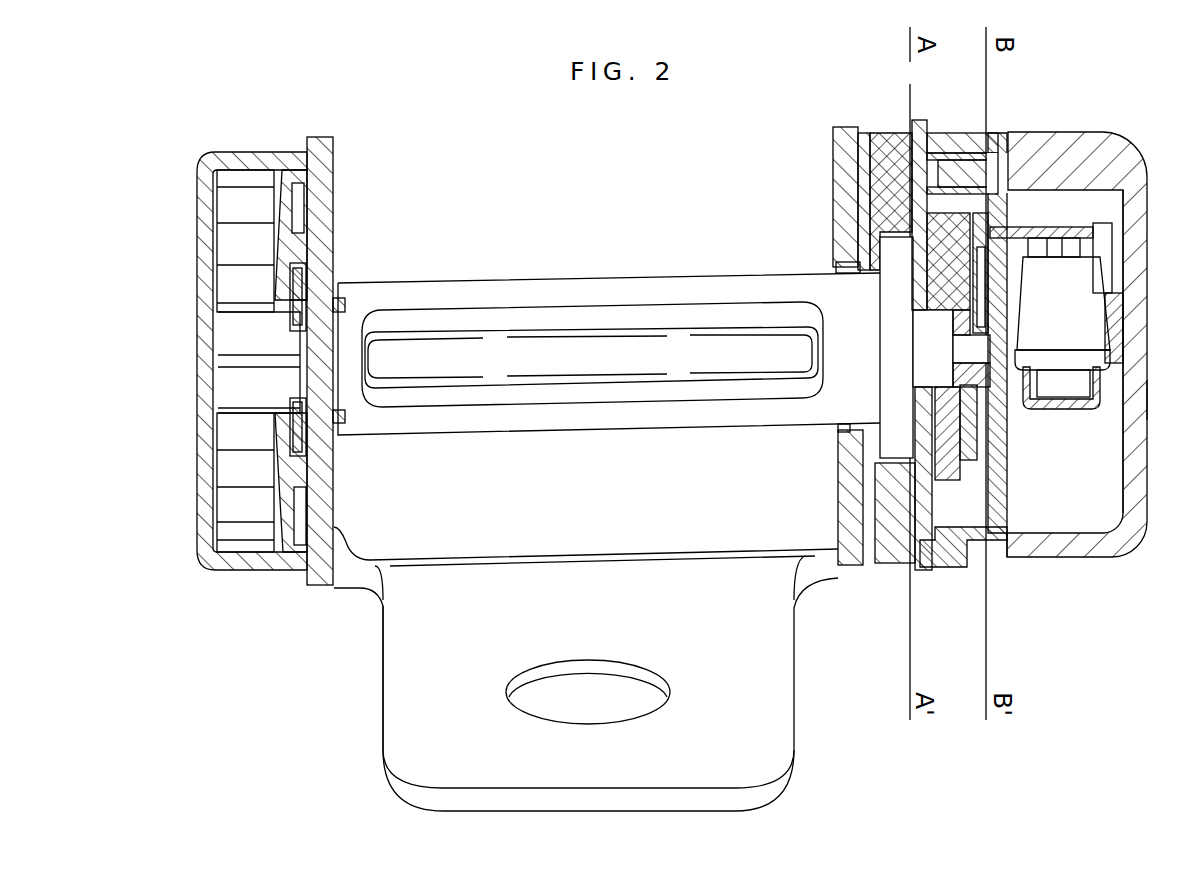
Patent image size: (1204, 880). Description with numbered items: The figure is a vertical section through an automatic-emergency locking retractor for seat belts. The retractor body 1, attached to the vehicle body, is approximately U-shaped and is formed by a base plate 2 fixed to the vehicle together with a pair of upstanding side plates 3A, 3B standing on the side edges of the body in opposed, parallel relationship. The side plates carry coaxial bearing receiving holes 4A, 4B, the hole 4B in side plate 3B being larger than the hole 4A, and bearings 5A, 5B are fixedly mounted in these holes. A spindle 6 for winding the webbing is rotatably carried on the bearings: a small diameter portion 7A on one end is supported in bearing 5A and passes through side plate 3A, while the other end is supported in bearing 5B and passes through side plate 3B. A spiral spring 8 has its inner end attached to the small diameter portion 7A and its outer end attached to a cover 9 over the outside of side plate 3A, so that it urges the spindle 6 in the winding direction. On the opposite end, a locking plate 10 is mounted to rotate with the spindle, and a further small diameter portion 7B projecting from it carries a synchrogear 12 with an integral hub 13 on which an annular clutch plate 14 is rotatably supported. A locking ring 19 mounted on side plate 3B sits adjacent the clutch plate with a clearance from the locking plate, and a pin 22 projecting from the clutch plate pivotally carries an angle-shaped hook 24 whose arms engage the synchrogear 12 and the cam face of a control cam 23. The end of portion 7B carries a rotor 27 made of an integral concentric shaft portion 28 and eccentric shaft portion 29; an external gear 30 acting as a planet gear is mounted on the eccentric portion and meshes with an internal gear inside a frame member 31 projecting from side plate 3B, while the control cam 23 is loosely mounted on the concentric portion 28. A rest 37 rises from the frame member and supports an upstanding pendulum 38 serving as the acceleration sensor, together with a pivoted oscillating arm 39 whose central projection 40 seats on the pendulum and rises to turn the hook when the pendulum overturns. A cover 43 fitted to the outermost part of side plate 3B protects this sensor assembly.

The retractor body 1 is at (775, 700).
The base plate 2 is at (395, 661).
The side plate 3A is at (326, 203).
The side plate 3B is at (838, 193).
The bearing receiving hole 4A is at (338, 296).
The bearing receiving hole 4B is at (866, 250).
The bearing 5A is at (300, 333).
The bearing 5B is at (842, 434).
The spindle 6 is at (527, 287).
The small diameter portion 7A is at (323, 362).
The small diameter portion 7B is at (922, 353).
The spiral spring 8 is at (262, 297).
The cover 9 is at (205, 232).
The locking plate 10 is at (845, 183).
The synchrogear 12 is at (1006, 548).
The hub 13 is at (918, 300).
The clutch plate 14 is at (927, 572).
The locking ring 19 is at (895, 566).
The pin 22 is at (968, 158).
The control cam 23 is at (938, 172).
The hook 24 is at (984, 163).
The rotor 27 is at (886, 150).
The concentric shaft portion 28 is at (893, 152).
The eccentric shaft portion 29 is at (1076, 152).
The external gear 30 is at (1040, 142).
The frame member 31 is at (995, 570).
The rest 37 is at (1117, 312).
The pendulum 38 is at (1085, 290).
The oscillating arm 39 is at (1120, 170).
The projection 40 is at (1113, 196).
The cover 43 is at (1138, 410).